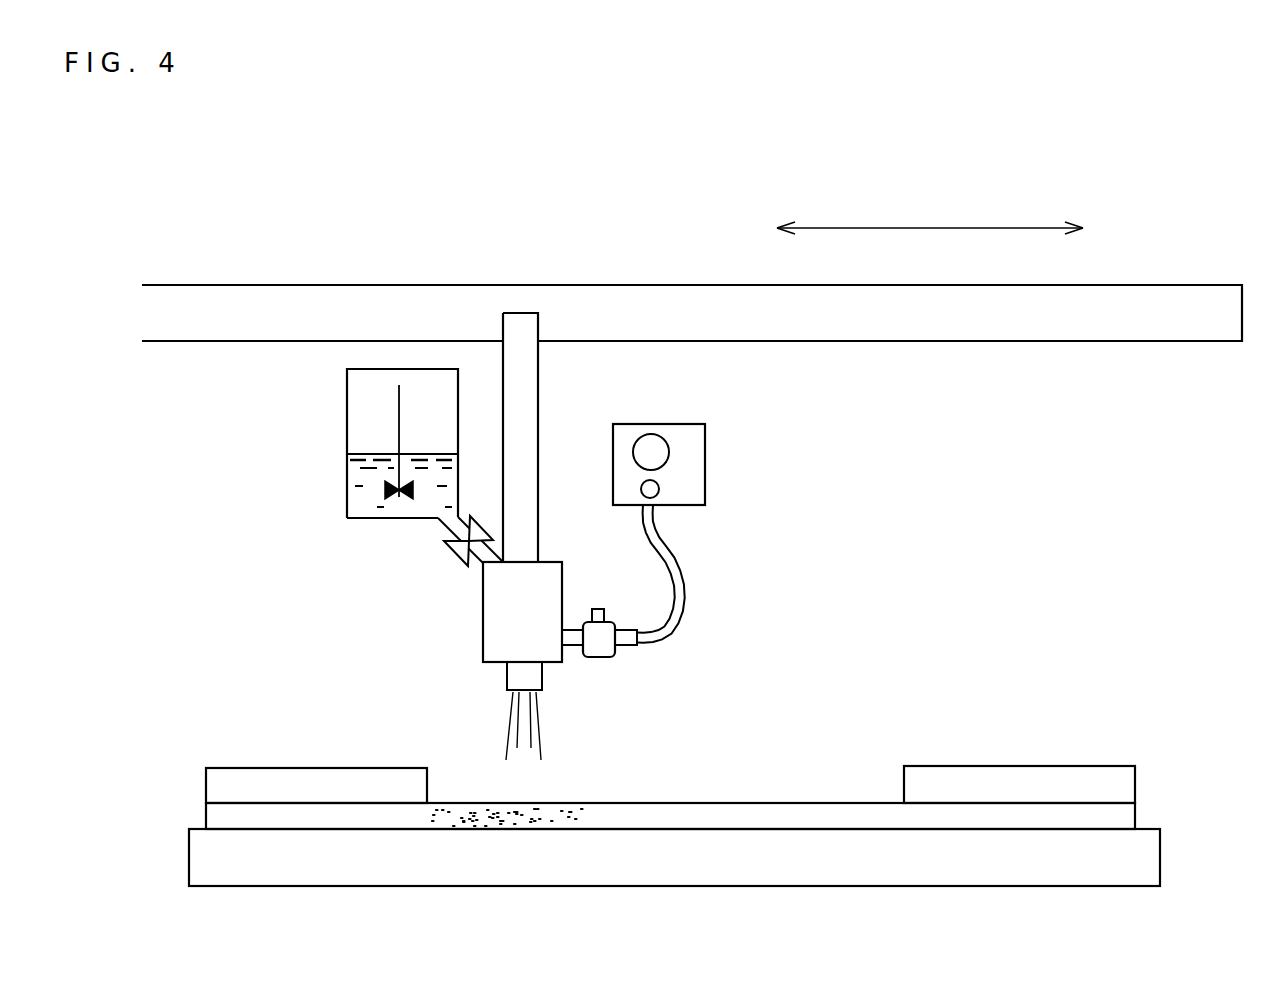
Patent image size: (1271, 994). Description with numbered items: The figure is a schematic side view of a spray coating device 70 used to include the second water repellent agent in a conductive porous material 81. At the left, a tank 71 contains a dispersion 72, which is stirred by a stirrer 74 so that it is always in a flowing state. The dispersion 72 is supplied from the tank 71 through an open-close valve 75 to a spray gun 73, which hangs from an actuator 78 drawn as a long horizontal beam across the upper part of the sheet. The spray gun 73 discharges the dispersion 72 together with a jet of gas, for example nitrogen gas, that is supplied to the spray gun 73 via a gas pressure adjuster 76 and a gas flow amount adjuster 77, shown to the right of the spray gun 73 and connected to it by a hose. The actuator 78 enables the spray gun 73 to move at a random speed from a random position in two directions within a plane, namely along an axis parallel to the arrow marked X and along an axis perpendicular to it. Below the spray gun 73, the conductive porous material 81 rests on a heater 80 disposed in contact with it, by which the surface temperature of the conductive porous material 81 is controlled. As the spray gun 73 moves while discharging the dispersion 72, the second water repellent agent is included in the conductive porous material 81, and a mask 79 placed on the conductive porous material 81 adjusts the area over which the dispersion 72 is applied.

The spray coating device 70 is at (1192, 247).
The tank 71 is at (347, 437).
The dispersion 72 is at (368, 490).
The spray gun 73 is at (500, 628).
The stirrer 74 is at (398, 405).
The open-close valve 75 is at (447, 555).
The gas pressure adjuster 76 is at (690, 444).
The gas flow amount adjuster 77 is at (604, 645).
The actuator 78 is at (285, 300).
The mask 79 is at (1060, 786).
The heater 80 is at (1145, 854).
The conductive porous material 81 is at (1113, 815).